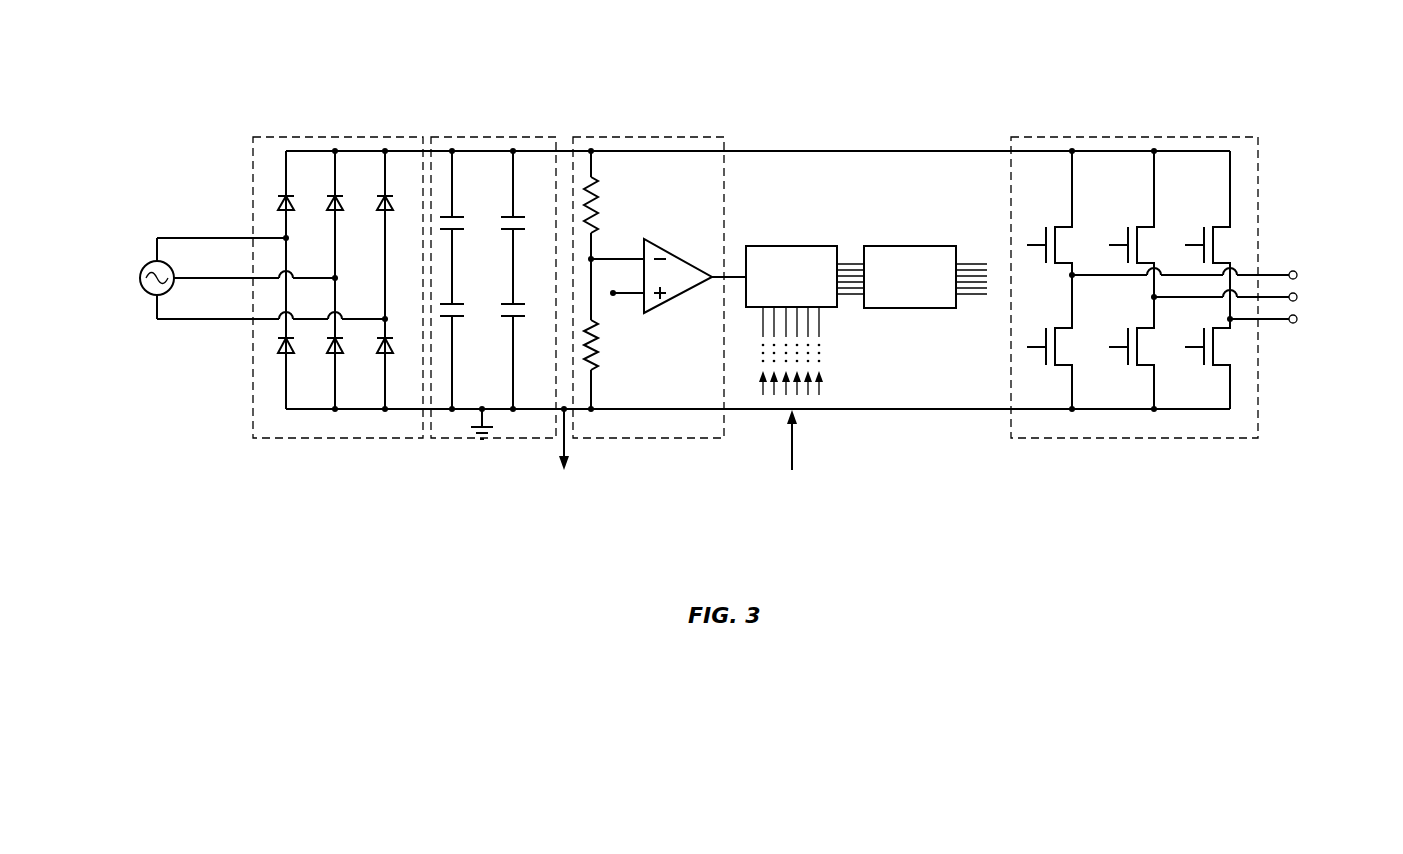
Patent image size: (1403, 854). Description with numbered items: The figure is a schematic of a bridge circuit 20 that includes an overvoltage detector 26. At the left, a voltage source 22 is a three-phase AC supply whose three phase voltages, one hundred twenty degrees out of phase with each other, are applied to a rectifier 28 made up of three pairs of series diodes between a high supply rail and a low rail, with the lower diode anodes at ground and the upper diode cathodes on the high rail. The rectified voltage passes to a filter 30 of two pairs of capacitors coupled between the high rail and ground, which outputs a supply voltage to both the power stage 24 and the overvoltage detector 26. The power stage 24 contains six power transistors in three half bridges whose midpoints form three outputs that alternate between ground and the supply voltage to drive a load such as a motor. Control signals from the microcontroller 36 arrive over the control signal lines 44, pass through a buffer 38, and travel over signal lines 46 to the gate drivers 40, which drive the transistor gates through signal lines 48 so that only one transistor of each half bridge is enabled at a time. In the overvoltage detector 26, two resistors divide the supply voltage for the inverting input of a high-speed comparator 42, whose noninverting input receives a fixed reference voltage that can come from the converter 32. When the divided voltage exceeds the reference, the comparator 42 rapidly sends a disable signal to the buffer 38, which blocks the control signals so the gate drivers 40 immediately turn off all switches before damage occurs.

The bridge circuit 20 is at (980, 80).
The voltage source 22 is at (152, 262).
The power stage 24 is at (1142, 132).
The overvoltage detector 26 is at (659, 264).
The rectifier 28 is at (352, 130).
The filter 30 is at (492, 130).
The converter 32 is at (563, 479).
The microcontroller 36 is at (791, 481).
The buffer 38 is at (792, 246).
The gate drivers 40 is at (912, 246).
The high-speed comparator 42 is at (678, 256).
The control signal lines from microcontroller 44 is at (832, 326).
The signal lines 46 is at (850, 250).
The signal lines 48 is at (978, 252).